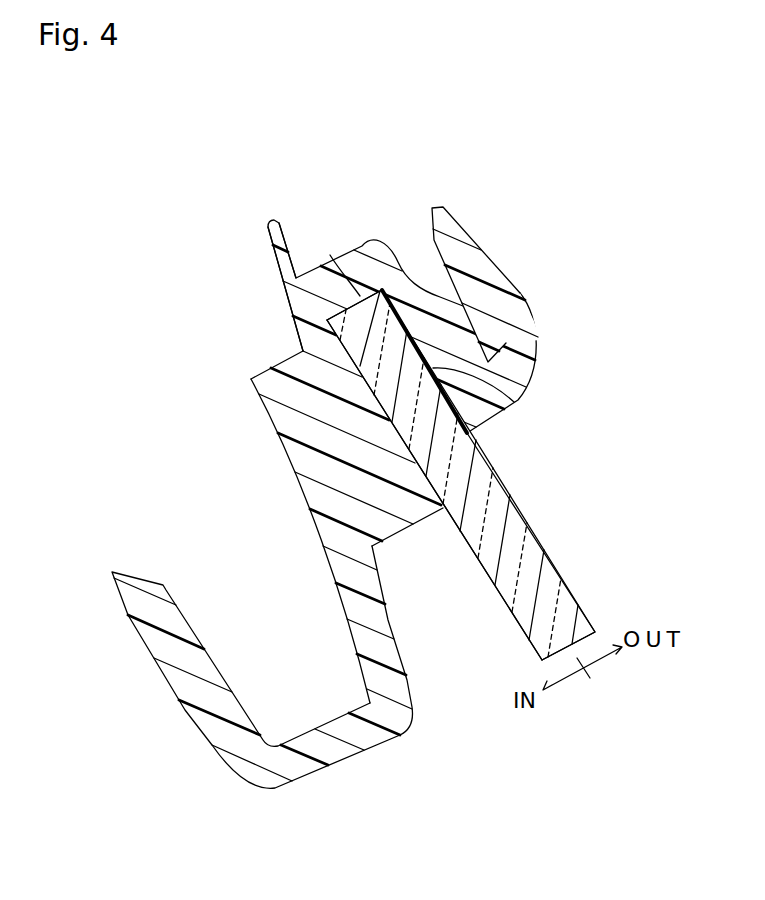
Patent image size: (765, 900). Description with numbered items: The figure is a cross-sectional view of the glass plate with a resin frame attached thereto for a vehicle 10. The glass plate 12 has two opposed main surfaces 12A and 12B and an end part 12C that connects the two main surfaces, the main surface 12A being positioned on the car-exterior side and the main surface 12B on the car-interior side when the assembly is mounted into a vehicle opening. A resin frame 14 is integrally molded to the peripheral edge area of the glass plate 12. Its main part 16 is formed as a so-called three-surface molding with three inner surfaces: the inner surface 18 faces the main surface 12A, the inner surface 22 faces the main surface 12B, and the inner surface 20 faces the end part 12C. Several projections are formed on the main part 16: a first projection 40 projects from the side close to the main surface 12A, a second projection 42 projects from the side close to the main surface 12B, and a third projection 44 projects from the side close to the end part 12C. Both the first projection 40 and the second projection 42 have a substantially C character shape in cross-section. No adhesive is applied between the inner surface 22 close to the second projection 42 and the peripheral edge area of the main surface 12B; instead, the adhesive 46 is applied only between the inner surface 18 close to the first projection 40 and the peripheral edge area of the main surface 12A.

The glass plate with a resin frame attached thereto for a vehicle 10 is at (373, 108).
The glass plate 12 is at (597, 602).
The main surface 12A is at (566, 551).
The main surface 12B is at (497, 592).
The end part 12C is at (345, 276).
The resin frame 14 is at (465, 174).
The main part 16 is at (251, 379).
The inner surface 18 is at (470, 434).
The inner surface 20 is at (303, 351).
The inner surface 22 is at (445, 512).
The first projection 40 is at (487, 268).
The second projection 42 is at (180, 621).
The third projection 44 is at (282, 231).
The adhesive 46 is at (497, 401).